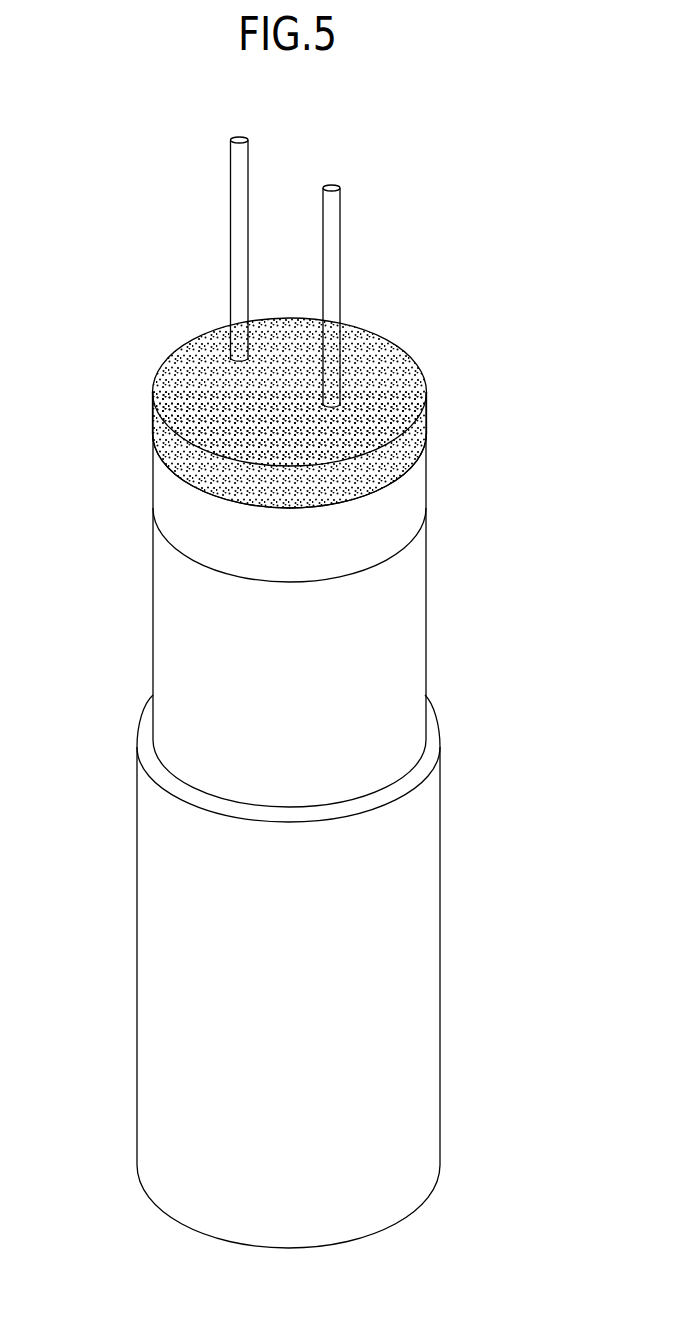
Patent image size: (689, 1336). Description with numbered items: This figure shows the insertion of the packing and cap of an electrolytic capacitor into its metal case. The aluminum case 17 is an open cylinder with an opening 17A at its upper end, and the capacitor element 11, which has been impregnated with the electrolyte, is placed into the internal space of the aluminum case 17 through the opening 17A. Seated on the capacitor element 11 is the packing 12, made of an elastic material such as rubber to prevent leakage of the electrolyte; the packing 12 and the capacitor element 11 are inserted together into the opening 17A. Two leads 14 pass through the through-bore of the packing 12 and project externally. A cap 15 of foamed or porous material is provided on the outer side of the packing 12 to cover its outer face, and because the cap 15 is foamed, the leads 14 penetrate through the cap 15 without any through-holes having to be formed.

The capacitor element 11 is at (157, 652).
The packing 12 is at (157, 487).
The lead 14 is at (230, 238).
The cap 15 is at (157, 432).
The aluminum case 17 is at (137, 1077).
The opening 17A is at (415, 758).